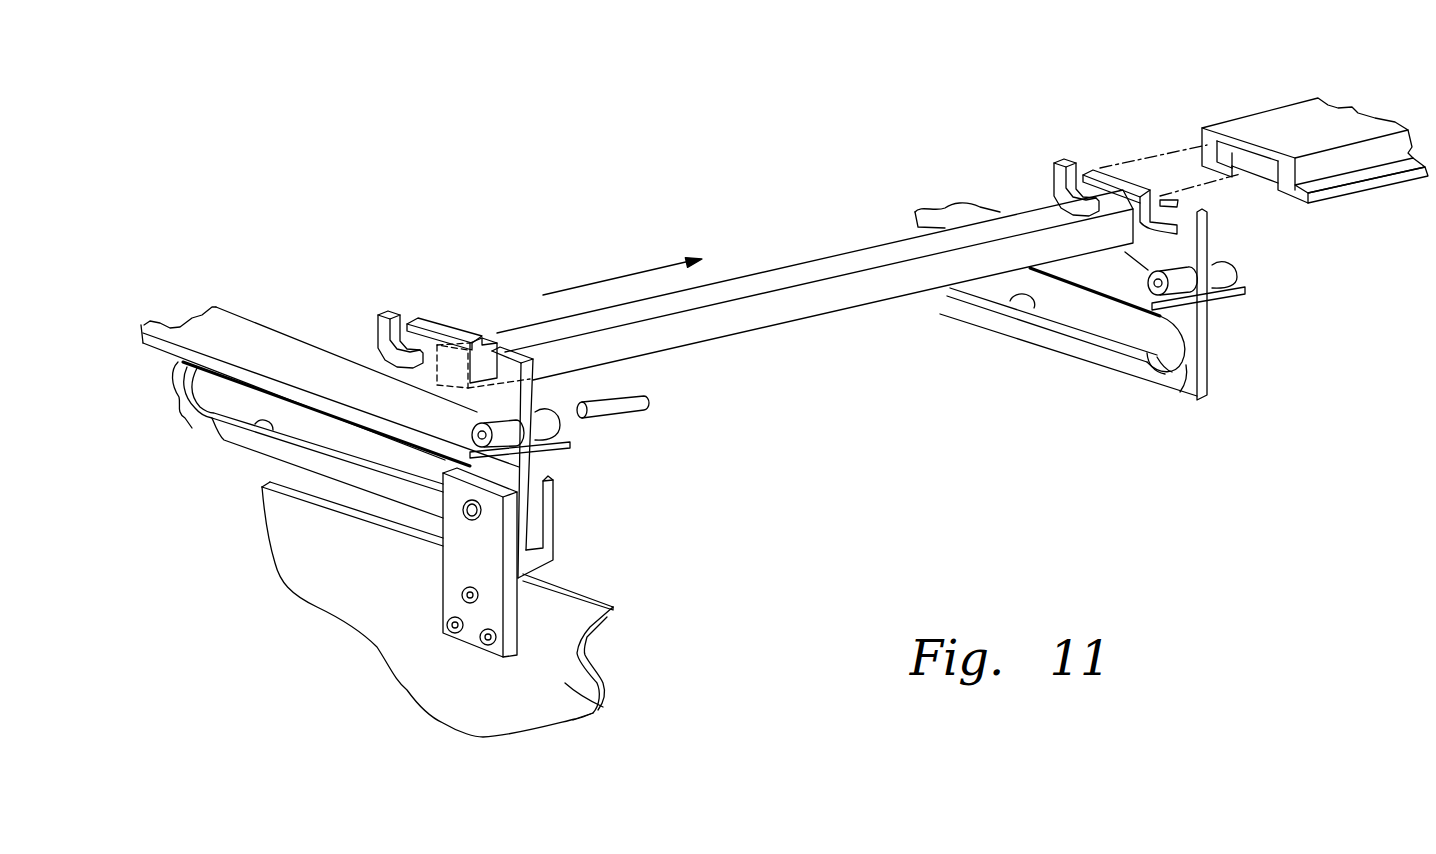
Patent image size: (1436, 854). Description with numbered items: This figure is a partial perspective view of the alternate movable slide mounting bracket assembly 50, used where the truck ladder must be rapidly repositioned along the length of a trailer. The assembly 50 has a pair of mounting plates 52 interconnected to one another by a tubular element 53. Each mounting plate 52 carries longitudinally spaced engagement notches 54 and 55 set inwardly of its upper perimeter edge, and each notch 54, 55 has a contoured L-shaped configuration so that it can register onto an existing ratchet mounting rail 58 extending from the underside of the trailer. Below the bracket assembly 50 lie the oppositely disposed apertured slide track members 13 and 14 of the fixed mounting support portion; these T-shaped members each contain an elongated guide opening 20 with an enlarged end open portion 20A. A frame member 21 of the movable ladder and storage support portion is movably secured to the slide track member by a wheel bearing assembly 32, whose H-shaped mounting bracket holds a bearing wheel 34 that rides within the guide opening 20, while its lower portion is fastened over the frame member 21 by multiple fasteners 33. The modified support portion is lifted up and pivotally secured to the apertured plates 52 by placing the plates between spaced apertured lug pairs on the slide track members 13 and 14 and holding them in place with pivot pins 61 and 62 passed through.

The slide track member 13 is at (222, 428).
The slide track member 14 is at (1110, 353).
The guide opening 20 is at (252, 427).
The enlarged end open portion 20A is at (1167, 363).
The frame member 21 is at (597, 713).
The wheel bearing assembly 32 is at (555, 552).
The fastener 33 is at (443, 640).
The bearing wheel 34 is at (520, 468).
The alternate mounting bracket assembly 50 is at (940, 161).
The mounting plate 52 is at (418, 330).
The tubular element 53 is at (762, 307).
The engagement notch 54 is at (390, 333).
The engagement notch 55 is at (482, 358).
The ratchet mounting rail 58 is at (1280, 127).
The pivot pin 61 is at (650, 409).
The pivot pin 62 is at (543, 423).